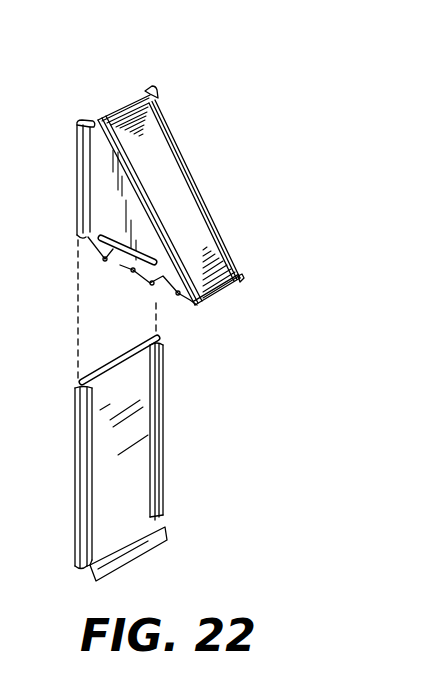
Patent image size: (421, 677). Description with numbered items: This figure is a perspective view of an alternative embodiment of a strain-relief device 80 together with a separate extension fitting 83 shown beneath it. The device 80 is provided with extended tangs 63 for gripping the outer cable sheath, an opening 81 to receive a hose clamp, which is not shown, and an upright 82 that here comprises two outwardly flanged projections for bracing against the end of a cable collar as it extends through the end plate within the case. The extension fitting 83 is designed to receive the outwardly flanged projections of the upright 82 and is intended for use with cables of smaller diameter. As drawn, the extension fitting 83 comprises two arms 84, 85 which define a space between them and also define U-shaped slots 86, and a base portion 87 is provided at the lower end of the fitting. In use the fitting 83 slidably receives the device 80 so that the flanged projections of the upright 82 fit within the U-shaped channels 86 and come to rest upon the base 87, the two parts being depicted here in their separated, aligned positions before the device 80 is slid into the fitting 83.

The strain-relief device 80 is at (184, 160).
The upright 82 is at (147, 88).
The opening 81 is at (105, 262).
The extended tangs 63 is at (153, 287).
The extension fitting 83 is at (122, 456).
The arm 84 is at (98, 427).
The arm 85 is at (155, 393).
The U-shaped slots 86 is at (150, 337).
The base portion 87 is at (146, 550).